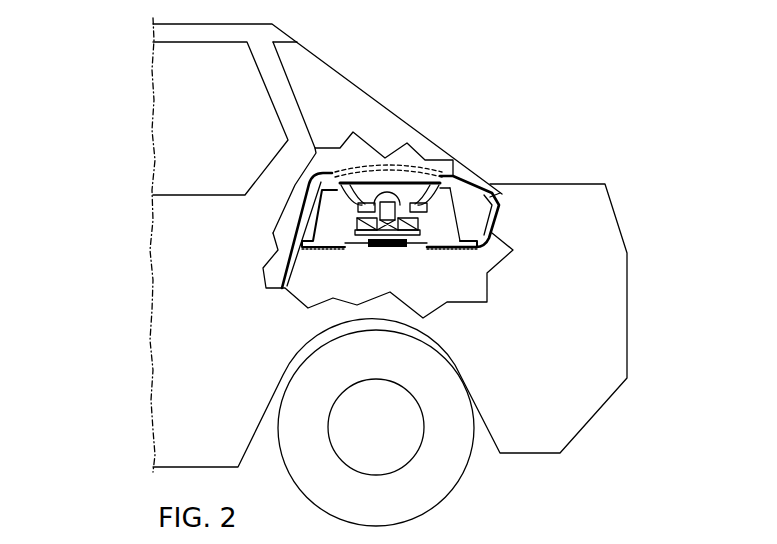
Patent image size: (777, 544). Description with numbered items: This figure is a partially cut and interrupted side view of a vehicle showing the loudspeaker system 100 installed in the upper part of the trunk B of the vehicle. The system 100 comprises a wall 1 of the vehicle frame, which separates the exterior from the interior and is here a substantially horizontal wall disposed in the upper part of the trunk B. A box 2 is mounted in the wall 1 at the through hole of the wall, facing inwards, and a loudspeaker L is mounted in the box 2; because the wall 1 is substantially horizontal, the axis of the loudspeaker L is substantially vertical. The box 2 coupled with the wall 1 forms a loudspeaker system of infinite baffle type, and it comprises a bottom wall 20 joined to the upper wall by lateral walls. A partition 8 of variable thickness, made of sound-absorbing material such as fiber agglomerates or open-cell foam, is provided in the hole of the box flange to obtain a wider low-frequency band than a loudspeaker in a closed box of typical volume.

The wall 1 is at (316, 248).
The box 2 is at (467, 225).
The partition 8 is at (400, 248).
The bottom wall 20 is at (360, 248).
The system 100 is at (467, 205).
The loudspeaker L is at (418, 178).
The trunk B is at (470, 190).